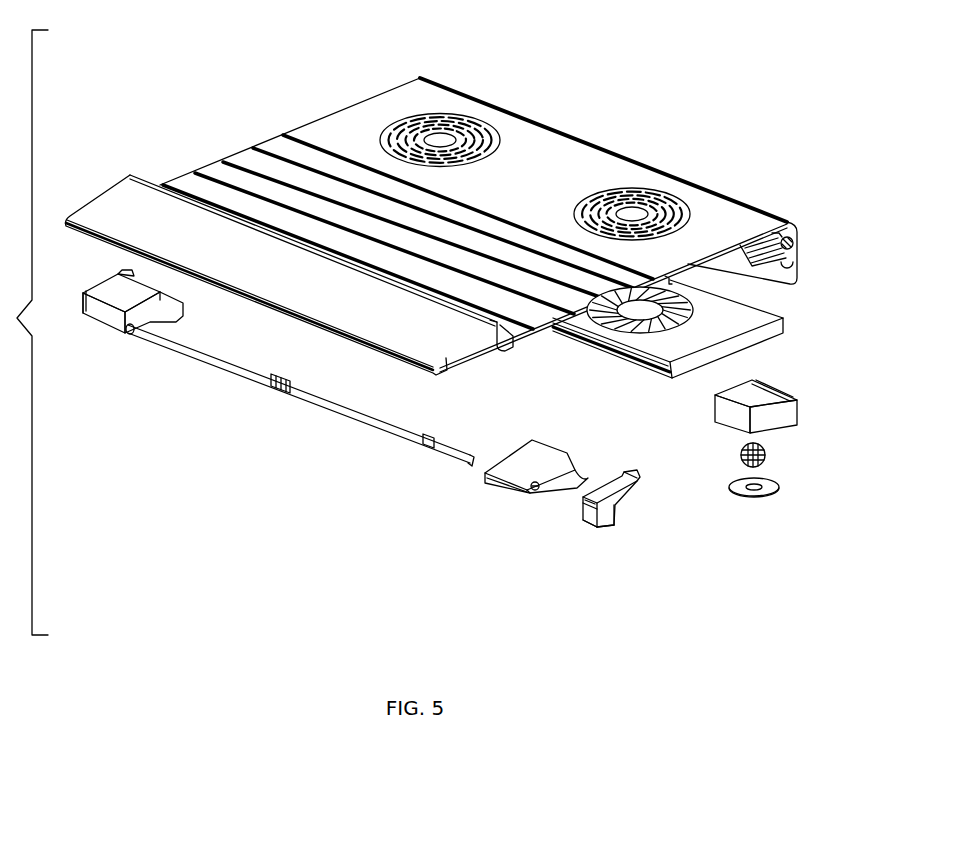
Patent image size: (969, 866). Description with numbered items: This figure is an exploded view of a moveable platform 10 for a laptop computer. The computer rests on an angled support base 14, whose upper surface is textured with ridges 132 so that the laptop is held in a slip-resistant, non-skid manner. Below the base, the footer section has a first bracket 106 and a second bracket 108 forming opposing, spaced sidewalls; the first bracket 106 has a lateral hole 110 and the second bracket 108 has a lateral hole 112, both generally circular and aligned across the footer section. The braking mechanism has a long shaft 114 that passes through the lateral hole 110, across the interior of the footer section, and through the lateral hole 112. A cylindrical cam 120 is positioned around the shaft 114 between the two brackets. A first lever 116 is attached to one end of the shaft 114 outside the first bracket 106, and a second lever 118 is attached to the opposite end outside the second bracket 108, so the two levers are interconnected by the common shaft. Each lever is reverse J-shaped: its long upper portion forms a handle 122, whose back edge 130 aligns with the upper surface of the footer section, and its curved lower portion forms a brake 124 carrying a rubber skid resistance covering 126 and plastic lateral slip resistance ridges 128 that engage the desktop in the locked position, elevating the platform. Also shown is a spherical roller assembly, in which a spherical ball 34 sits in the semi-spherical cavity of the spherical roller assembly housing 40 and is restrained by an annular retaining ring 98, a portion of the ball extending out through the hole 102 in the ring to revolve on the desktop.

The moveable platform 10 is at (261, 88).
The angled support base 14 is at (293, 120).
The ridges 132 is at (233, 152).
The second lever 118 is at (80, 306).
The second bracket 108 is at (112, 360).
The lateral hole 112 is at (137, 334).
The cylindrical cam 120 is at (278, 396).
The long shaft 114 is at (370, 430).
The first bracket 106 is at (509, 506).
The lateral hole 110 is at (528, 493).
The back edge 130 is at (598, 481).
The handle 122 is at (616, 471).
The first lever 116 is at (586, 524).
The brake 124 is at (600, 518).
The skid resistance covering 126 is at (585, 529).
The lateral slip resistance ridges 128 is at (546, 575).
The spherical roller assembly housing 40 is at (787, 407).
The spherical ball 34 is at (770, 455).
The annular retaining ring 98 is at (777, 509).
The hole 102 is at (753, 489).